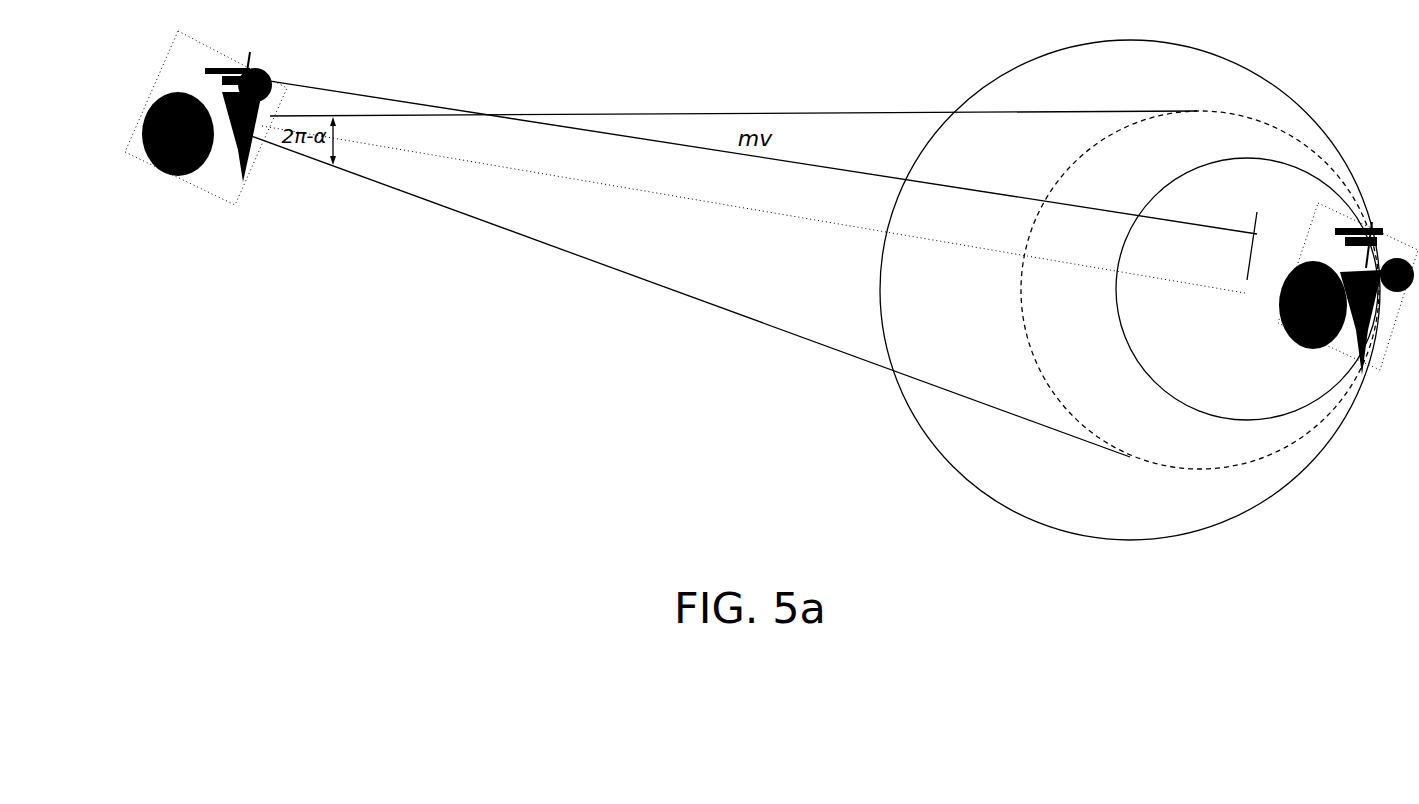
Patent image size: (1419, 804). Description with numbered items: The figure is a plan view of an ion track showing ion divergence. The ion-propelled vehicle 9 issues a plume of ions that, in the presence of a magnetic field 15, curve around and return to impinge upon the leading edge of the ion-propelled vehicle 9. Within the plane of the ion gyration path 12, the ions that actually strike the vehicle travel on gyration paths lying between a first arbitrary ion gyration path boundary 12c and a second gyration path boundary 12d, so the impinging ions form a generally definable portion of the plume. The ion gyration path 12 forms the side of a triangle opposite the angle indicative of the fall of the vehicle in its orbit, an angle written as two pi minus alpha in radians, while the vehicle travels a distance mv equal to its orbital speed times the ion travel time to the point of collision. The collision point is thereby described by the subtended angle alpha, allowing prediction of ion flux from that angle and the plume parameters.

The ion-propelled vehicle 9 is at (1377, 232).
The magnetic field 15 is at (1212, 240).
The ion gyration path 12 is at (1187, 468).
The first arbitrary ion gyration path boundary 12c is at (993, 502).
The second gyration path boundary 12d is at (1205, 415).